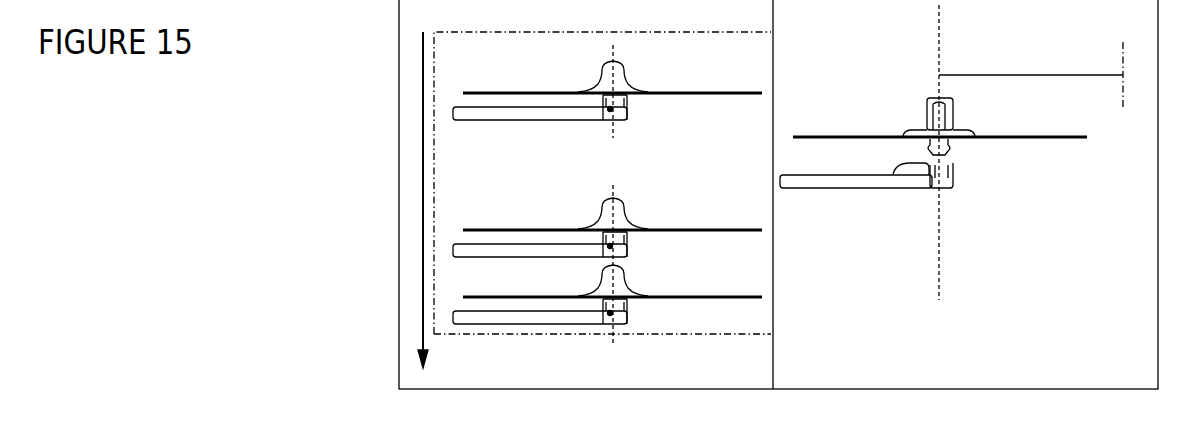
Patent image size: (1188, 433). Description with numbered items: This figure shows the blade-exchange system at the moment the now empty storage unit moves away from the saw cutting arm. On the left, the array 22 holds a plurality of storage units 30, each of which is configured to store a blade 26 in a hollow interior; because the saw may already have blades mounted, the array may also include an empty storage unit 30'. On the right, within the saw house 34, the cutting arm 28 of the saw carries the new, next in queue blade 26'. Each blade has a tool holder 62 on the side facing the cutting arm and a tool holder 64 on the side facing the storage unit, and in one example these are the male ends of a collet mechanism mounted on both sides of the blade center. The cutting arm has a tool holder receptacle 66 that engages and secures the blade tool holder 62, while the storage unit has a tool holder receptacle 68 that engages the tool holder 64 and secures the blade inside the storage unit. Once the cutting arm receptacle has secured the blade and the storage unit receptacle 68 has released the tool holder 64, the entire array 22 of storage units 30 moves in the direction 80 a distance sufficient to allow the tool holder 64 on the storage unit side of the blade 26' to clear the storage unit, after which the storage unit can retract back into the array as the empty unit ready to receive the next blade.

The array 22 is at (486, 31).
The direction 80 is at (422, 58).
The blade 26 is at (612, 214).
The storage unit 30 is at (540, 228).
The cutting arm 28 is at (1016, 75).
The new, next in queue blade 26' is at (940, 154).
The empty storage unit 30' is at (856, 197).
The tool holder 62 is at (952, 117).
The tool holder receptacle 66 is at (928, 121).
The tool holder 64 is at (950, 143).
The tool holder receptacle 68 is at (926, 180).
The saw house 34 is at (1104, 342).